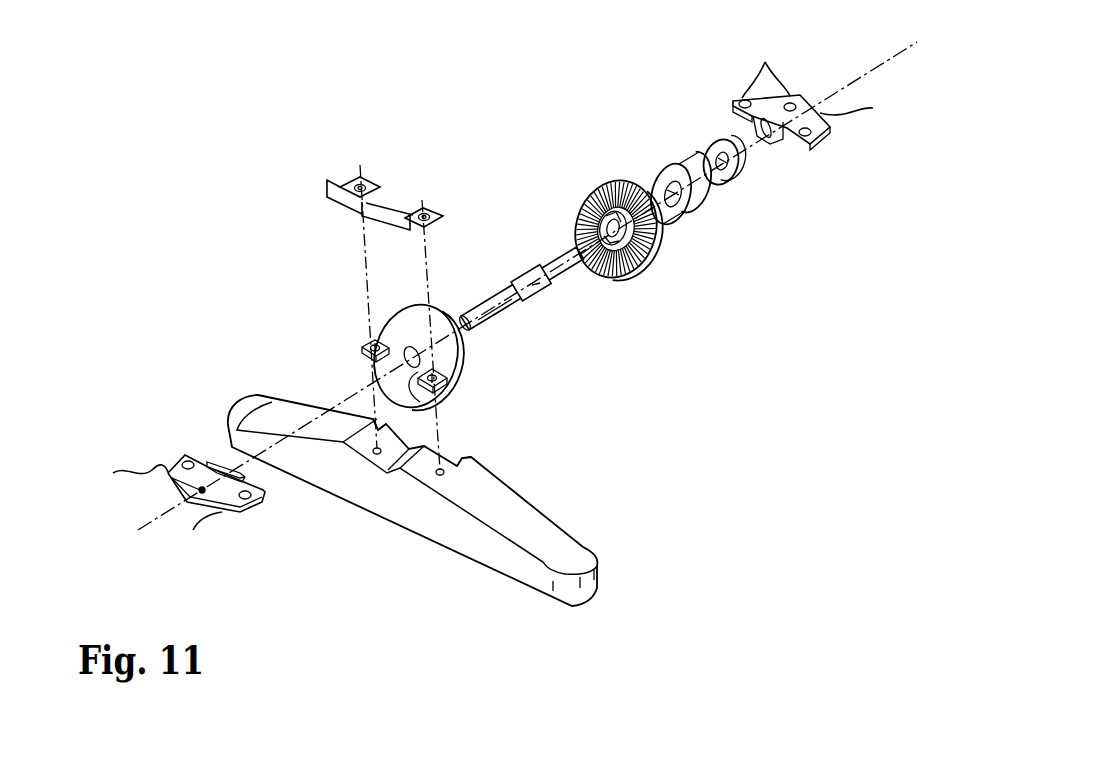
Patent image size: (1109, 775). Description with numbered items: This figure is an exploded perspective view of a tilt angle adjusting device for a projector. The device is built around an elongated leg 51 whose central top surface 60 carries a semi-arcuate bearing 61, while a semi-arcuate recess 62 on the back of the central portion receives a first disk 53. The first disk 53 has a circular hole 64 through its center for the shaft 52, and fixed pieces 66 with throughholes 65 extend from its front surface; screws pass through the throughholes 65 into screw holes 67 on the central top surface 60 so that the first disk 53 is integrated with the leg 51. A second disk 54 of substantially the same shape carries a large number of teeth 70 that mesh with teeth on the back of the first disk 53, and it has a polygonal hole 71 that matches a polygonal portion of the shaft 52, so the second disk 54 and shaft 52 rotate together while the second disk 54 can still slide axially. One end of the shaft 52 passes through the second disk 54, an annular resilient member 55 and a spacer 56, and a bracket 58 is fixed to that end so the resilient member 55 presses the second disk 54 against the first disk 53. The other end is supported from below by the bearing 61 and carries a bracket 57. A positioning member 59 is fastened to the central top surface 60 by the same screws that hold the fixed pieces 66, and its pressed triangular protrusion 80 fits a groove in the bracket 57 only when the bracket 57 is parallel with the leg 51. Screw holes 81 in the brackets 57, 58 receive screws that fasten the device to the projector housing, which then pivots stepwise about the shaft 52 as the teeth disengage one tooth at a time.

The leg 51 is at (557, 519).
The shaft 52 is at (498, 287).
The first disk 53 is at (460, 380).
The second disk 54 is at (661, 235).
The resilient member 55 is at (715, 212).
The spacer 56 is at (747, 167).
The bracket 57 is at (250, 512).
The bracket 58 is at (813, 148).
The positioning member 59 is at (347, 231).
The central top surface 60 is at (433, 480).
The semi-arcuate bearing 61 is at (397, 473).
The semi-arcuate recess 62 is at (457, 457).
The circular hole 64 is at (388, 419).
The throughholes 65 is at (367, 337).
The fixed pieces 66 is at (357, 357).
The screw holes 67 is at (373, 452).
The teeth 70 is at (620, 283).
The hole 71 is at (592, 178).
The protrusion 80 is at (366, 218).
The screw holes 81 is at (491, 296).